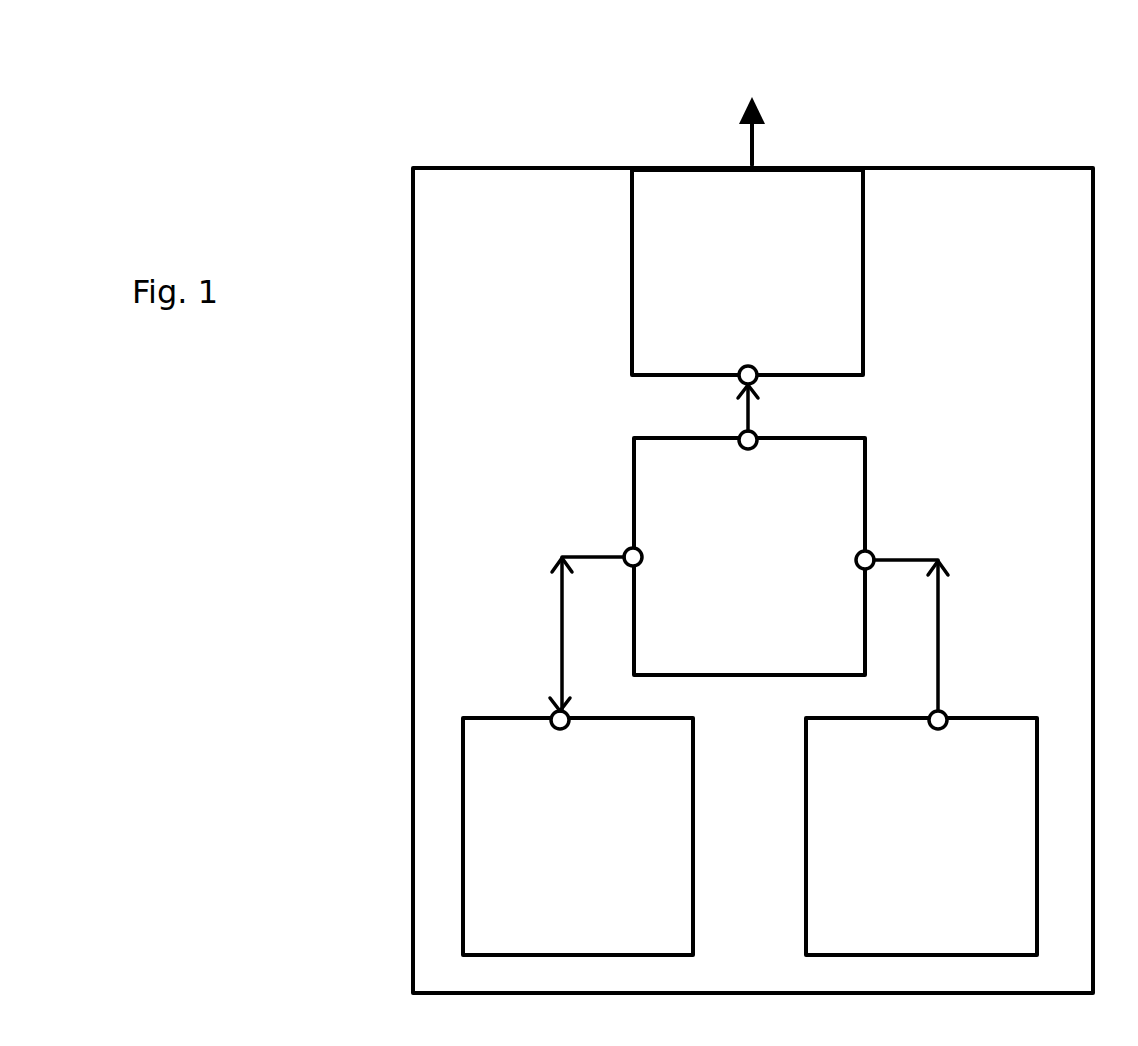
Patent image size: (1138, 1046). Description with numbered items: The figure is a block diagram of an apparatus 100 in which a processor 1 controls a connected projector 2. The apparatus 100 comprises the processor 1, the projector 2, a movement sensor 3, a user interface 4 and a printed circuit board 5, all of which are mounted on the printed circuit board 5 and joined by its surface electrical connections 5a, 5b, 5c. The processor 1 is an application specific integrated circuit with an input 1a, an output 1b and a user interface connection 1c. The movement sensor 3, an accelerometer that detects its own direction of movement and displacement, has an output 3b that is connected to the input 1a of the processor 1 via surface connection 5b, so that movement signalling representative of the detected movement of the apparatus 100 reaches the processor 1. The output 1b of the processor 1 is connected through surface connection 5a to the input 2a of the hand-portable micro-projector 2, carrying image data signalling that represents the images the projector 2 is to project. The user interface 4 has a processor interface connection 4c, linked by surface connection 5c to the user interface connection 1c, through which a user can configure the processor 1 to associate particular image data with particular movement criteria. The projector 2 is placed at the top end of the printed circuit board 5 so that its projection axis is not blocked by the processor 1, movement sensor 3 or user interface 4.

The apparatus 100 is at (352, 638).
The processor 1 is at (749, 556).
The projector 2 is at (747, 272).
The movement sensor 3 is at (921, 836).
The user interface 4 is at (578, 836).
The printed circuit board 5 is at (753, 580).
The input 1a is at (873, 553).
The output 1b is at (757, 437).
The user interface connection 1c is at (624, 552).
The input 2a is at (757, 370).
The output 3b is at (947, 716).
The processor interface connection 4c is at (570, 722).
The surface connection 5a is at (745, 420).
The surface connection 5b is at (938, 620).
The surface connection 5c is at (560, 615).